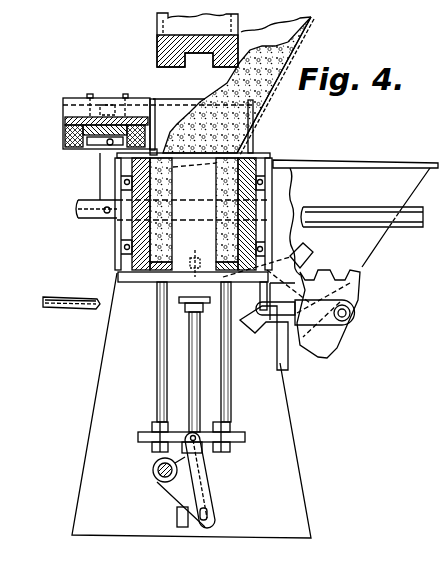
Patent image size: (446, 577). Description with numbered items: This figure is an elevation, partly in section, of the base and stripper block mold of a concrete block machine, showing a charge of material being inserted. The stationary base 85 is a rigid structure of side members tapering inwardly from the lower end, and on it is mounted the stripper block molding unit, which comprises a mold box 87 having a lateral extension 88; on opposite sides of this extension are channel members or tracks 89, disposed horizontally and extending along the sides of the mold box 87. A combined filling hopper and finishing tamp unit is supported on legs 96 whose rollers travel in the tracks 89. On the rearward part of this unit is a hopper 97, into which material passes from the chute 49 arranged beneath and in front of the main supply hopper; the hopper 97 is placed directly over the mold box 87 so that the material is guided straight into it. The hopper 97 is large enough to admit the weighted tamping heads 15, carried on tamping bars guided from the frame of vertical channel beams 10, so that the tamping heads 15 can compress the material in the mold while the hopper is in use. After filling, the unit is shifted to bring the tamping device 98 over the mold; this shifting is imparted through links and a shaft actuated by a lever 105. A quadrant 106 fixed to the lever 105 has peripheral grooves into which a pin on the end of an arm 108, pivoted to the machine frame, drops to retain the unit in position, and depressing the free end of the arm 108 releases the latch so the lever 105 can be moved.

The channel beams 10 is at (441, 113).
The tamping heads 15 is at (157, 48).
The chute 49 is at (303, 33).
The stationary base 85 is at (273, 455).
The mold box 87 is at (271, 160).
The lateral extension 88 is at (348, 162).
The tracks 89 is at (367, 218).
The legs 96 is at (100, 167).
The hopper 97 is at (256, 118).
The tamping device 98 is at (72, 115).
The lever 105 is at (80, 310).
The quadrant 106 is at (327, 342).
The arm 108 is at (257, 335).